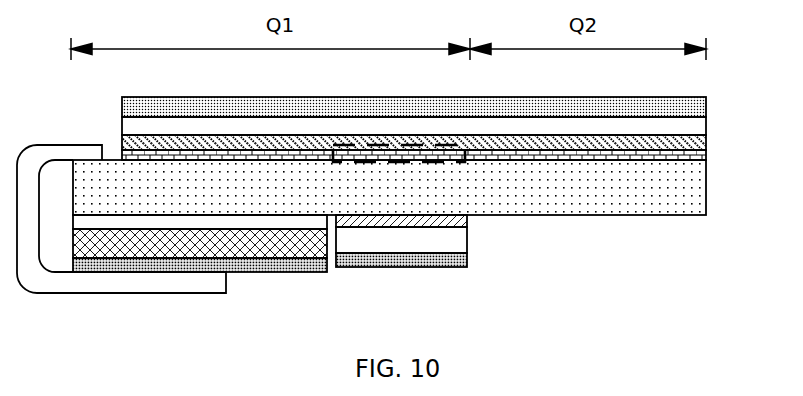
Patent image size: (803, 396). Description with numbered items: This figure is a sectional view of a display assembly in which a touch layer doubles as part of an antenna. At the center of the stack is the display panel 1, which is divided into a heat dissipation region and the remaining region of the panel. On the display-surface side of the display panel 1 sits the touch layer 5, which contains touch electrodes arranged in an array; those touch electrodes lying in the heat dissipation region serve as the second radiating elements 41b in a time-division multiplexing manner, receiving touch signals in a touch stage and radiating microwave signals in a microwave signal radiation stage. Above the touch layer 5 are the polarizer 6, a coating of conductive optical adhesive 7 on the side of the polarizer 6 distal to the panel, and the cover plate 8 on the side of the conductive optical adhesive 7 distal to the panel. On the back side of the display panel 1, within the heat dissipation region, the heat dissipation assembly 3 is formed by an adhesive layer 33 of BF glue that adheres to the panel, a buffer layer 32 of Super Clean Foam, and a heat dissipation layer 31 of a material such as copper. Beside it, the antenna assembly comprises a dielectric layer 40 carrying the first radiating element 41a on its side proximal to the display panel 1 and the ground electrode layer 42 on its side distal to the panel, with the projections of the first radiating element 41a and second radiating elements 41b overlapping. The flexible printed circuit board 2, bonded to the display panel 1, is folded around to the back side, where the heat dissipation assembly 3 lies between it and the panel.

The display panel 1 is at (692, 193).
The flexible printed circuit board 2 is at (123, 288).
The heat dissipation assembly 3 is at (205, 284).
The heat dissipation layer 31 is at (330, 318).
The buffer layer 32 is at (268, 248).
The adhesive layer 33 is at (287, 223).
The touch layer 5 is at (698, 158).
The polarizer 6 is at (698, 140).
The conductive optical adhesive 7 is at (698, 122).
The cover plate 8 is at (698, 105).
The dielectric layer 40 is at (445, 243).
The first radiating element 41a is at (447, 221).
The second radiating element 41b is at (465, 162).
The ground electrode layer 42 is at (462, 263).